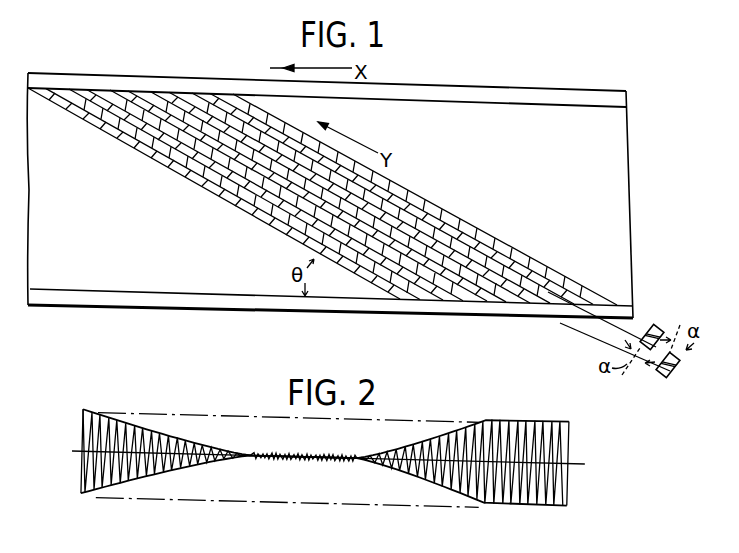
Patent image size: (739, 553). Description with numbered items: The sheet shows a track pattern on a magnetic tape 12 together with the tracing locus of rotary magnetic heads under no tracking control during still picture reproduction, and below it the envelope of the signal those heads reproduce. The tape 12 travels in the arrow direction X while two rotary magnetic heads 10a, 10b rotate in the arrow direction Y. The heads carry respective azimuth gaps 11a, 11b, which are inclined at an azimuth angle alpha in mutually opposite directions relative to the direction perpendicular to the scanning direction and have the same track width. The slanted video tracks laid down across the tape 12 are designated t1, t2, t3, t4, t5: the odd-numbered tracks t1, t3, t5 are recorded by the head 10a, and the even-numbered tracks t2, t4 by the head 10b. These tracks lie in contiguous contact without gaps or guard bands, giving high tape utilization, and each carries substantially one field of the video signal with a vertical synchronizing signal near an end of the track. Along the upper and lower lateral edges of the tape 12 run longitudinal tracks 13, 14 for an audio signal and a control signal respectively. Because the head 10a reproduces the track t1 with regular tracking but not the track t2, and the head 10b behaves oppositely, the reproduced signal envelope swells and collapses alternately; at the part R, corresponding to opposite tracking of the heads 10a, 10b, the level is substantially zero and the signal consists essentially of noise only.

In FIG. 1, the tape 12 is at (632, 176).
In FIG. 1, the audio track 13 is at (500, 93).
In FIG. 1, the control track 14 is at (291, 307).
In FIG. 1, the rotary magnetic head 10a is at (645, 325).
In FIG. 1, the rotary magnetic head 10b is at (663, 372).
In FIG. 1, the azimuth gap 11a is at (660, 336).
In FIG. 1, the azimuth gap 11b is at (676, 378).
In FIG. 1, the track t1 is at (538, 274).
In FIG. 1, the track t2 is at (528, 292).
In FIG. 1, the track t3 is at (490, 290).
In FIG. 1, the track t4 is at (449, 290).
In FIG. 1, the track t5 is at (402, 288).
In FIG. 2, the part of envelope R is at (291, 462).